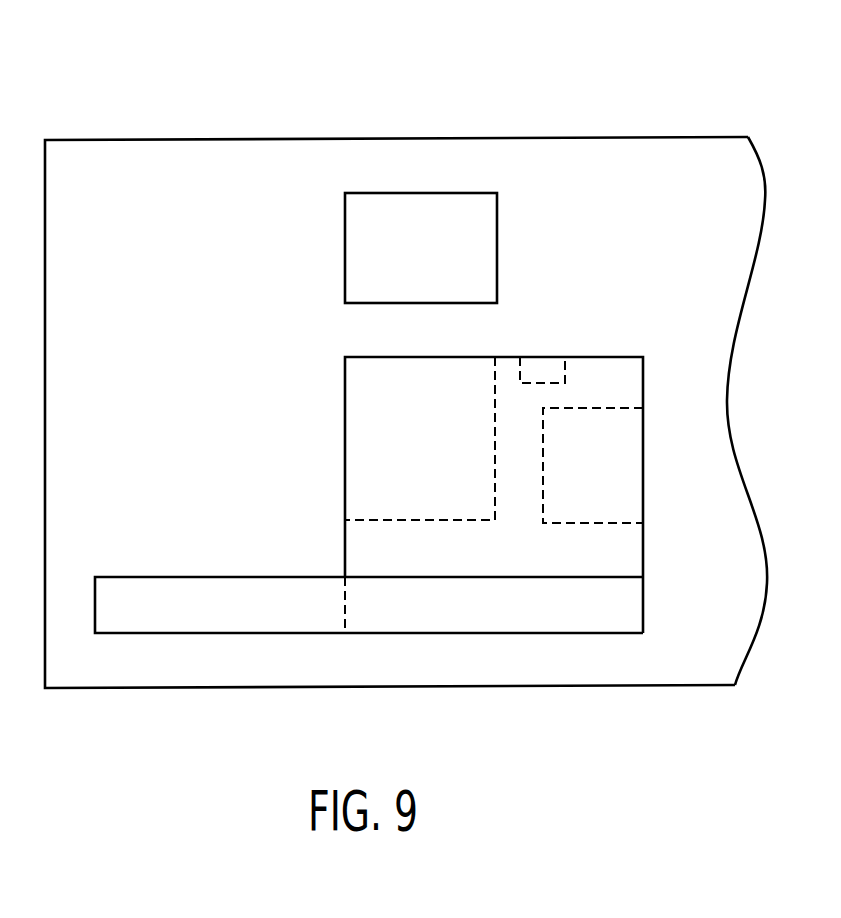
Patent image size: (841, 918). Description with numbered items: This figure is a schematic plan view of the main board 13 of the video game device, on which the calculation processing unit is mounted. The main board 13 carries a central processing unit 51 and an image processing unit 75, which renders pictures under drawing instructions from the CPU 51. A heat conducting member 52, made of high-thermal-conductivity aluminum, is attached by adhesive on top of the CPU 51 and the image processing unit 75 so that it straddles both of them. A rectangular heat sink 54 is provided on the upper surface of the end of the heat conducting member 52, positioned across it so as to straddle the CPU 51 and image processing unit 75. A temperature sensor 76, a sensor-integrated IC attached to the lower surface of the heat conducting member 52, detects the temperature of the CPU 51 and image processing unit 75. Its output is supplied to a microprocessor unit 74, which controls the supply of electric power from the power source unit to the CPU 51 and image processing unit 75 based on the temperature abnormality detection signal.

The main board 13 is at (188, 190).
The microprocessor unit 74 is at (395, 210).
The heat conducting member 52 is at (365, 550).
The rectangular heat sink 54 is at (145, 585).
The central processing unit 51 is at (380, 398).
The temperature sensor 76 is at (537, 368).
The image processing unit 75 is at (598, 453).